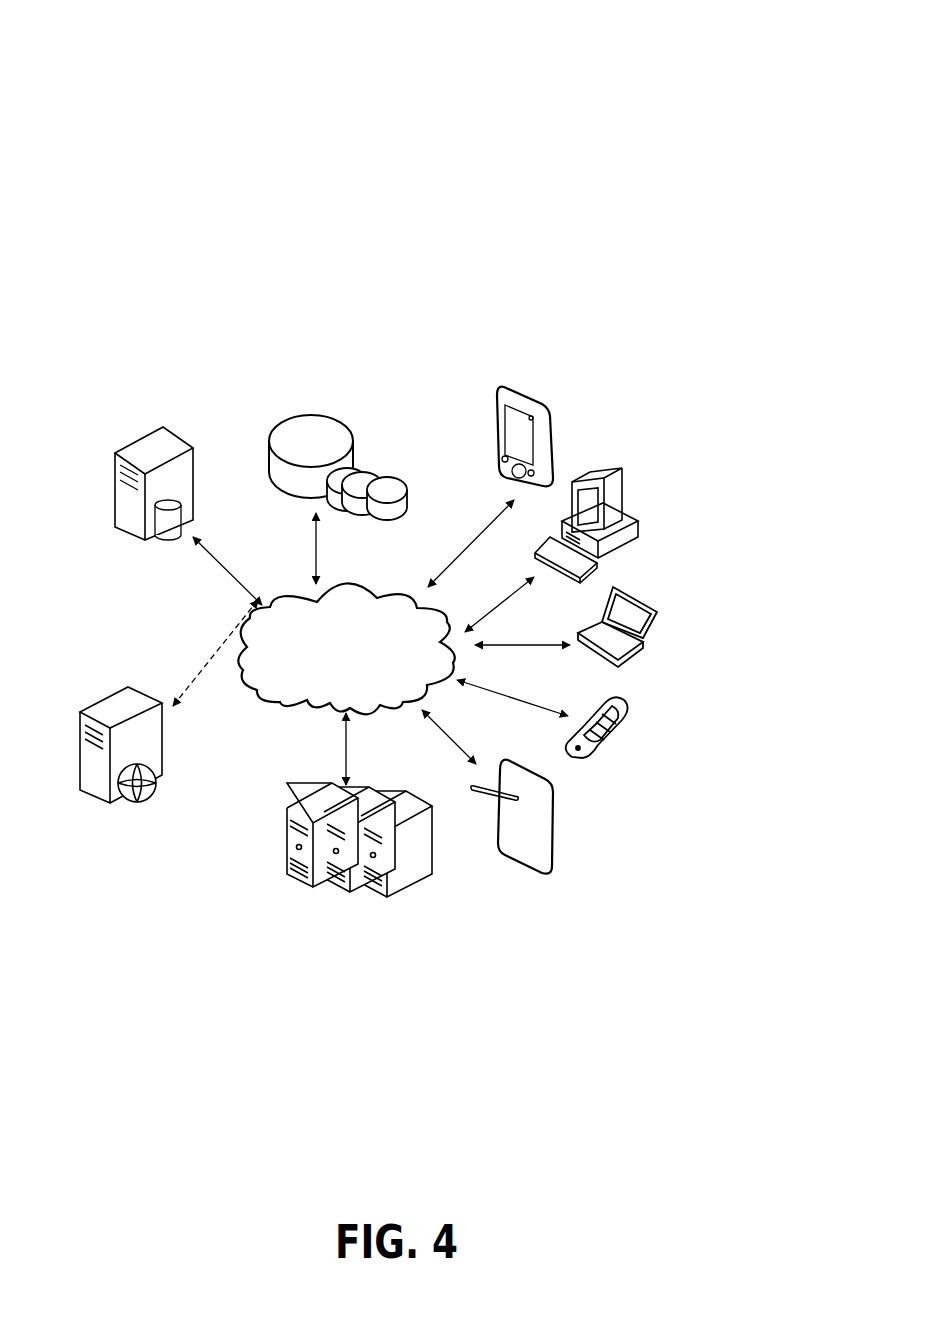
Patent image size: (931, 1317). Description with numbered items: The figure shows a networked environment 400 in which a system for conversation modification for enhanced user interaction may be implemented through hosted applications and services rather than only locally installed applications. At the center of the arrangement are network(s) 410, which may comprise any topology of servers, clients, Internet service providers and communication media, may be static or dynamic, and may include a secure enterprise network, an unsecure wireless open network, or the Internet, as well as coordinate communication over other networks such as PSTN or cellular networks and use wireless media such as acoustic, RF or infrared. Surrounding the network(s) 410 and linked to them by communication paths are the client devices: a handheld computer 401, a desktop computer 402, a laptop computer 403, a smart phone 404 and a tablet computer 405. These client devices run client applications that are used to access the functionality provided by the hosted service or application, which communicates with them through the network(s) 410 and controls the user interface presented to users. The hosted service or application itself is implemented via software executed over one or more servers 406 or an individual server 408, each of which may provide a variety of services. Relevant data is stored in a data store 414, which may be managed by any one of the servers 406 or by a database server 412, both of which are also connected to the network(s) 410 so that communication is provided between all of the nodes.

The networked environment 400 is at (682, 13).
The handheld computer 401 is at (555, 391).
The desktop computer 402 is at (637, 481).
The laptop computer 403 is at (654, 585).
The smart phone 404 is at (629, 695).
The tablet computer 405 is at (567, 804).
The servers 406 is at (314, 785).
The individual server 408 is at (101, 704).
The network(s) 410 is at (352, 574).
The database server 412 is at (164, 546).
The data store 414 is at (324, 392).